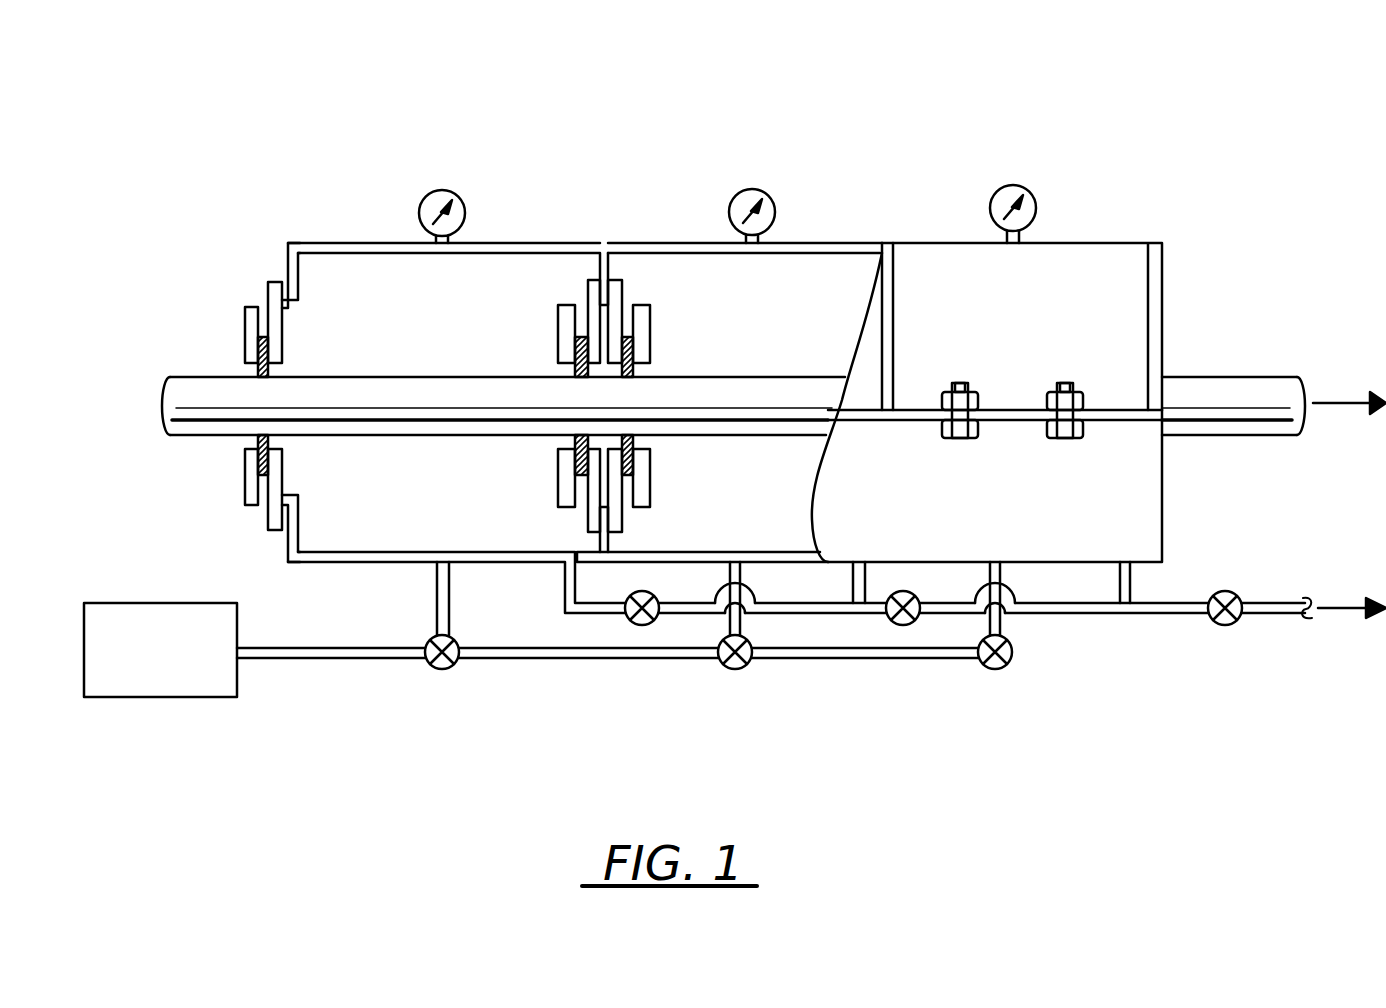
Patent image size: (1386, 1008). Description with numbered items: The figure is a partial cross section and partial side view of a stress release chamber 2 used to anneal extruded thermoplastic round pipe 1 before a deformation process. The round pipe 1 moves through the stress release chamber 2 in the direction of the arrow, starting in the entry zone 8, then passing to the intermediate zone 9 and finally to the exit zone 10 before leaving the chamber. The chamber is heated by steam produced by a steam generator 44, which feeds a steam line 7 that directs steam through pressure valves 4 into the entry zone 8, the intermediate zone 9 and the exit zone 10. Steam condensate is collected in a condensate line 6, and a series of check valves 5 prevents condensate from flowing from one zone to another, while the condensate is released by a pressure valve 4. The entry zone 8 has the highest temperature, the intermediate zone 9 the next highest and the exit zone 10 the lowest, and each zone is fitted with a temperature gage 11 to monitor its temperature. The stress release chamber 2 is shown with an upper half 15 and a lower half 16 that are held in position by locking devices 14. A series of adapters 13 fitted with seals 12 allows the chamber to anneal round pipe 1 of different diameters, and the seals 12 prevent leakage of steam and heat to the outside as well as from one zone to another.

The round pipe 1 is at (202, 376).
The stress release chamber 2 is at (325, 220).
The pressure valve 4 is at (1238, 597).
The check valve 5 is at (922, 710).
The condensate line 6 is at (1147, 614).
The steam line 7 is at (317, 660).
The entry zone 8 is at (505, 290).
The intermediate zone 9 is at (780, 288).
The exit zone 10 is at (1046, 396).
The temperature gage 11 is at (1013, 185).
The seal 12 is at (633, 372).
The adapter 13 is at (650, 337).
The locking device 14 is at (1065, 440).
The upper half 15 is at (1123, 302).
The lower half 16 is at (1125, 505).
The steam generator 44 is at (120, 603).